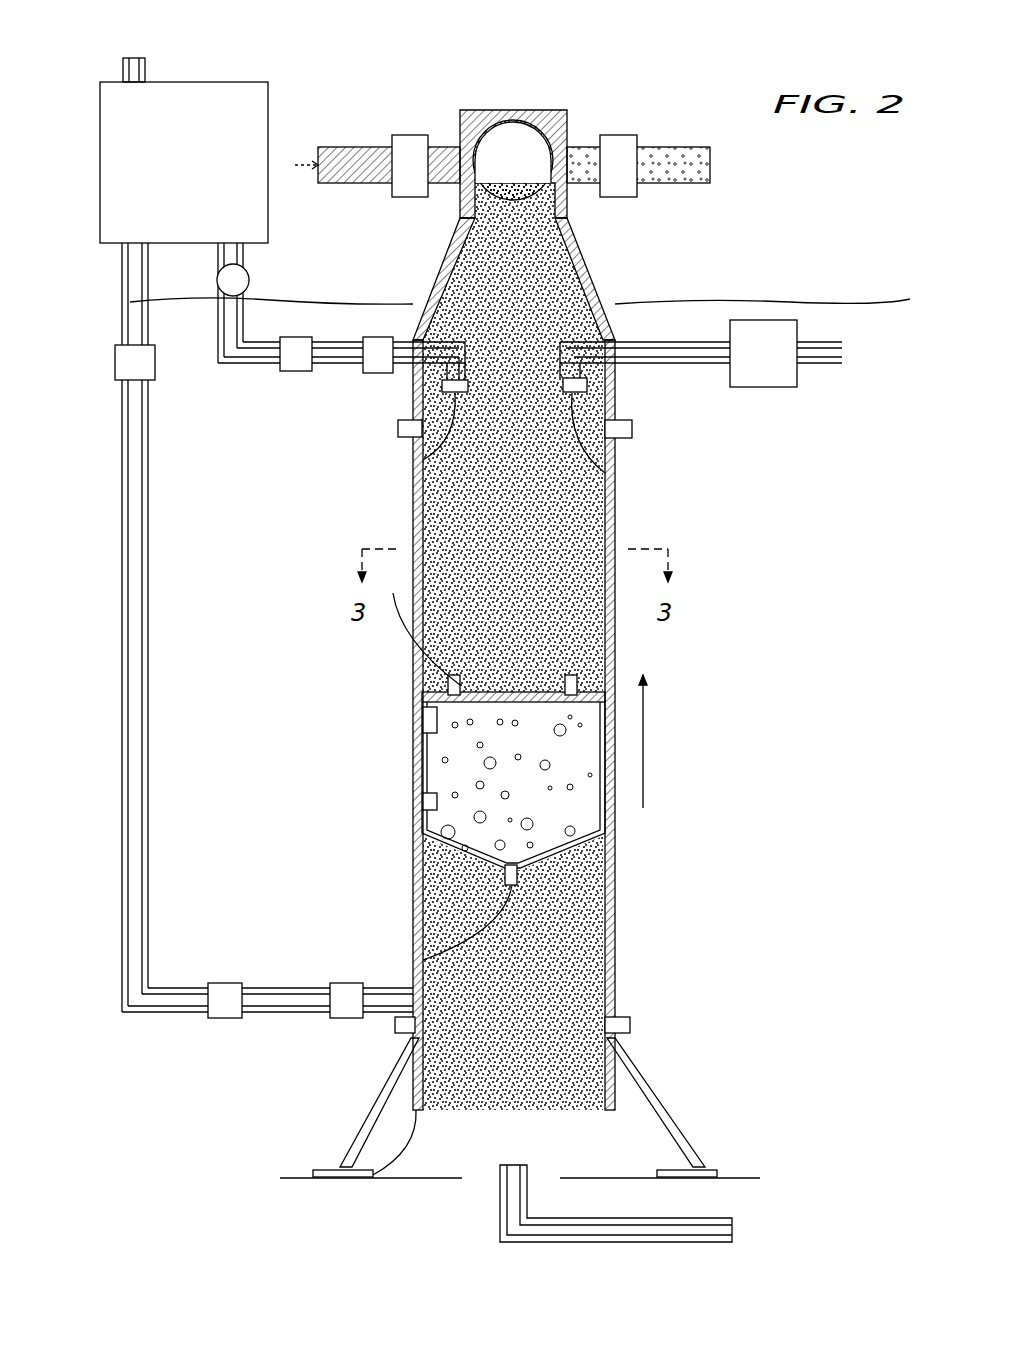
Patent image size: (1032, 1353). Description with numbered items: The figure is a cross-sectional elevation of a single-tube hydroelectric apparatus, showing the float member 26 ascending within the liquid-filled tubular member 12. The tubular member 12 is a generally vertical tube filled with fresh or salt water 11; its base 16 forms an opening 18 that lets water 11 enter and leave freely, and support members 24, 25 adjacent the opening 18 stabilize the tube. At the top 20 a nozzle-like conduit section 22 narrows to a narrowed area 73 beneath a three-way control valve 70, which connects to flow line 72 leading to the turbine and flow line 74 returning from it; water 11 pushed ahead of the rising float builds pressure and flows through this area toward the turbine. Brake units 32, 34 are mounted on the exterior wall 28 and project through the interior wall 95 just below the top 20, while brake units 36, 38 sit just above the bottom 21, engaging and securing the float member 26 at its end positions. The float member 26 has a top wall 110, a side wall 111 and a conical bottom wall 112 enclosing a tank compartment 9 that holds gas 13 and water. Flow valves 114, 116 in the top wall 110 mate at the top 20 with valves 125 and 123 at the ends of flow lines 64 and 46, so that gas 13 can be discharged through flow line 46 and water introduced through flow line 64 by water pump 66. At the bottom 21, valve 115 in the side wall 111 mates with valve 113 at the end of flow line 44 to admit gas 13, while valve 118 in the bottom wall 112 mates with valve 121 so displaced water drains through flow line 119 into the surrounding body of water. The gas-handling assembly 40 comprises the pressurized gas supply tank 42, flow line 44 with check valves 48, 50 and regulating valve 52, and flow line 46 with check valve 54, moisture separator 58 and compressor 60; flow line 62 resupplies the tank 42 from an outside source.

The tank compartment 9 is at (422, 780).
The water 11 is at (336, 147).
The tubular member 12 is at (668, 682).
The gaseous material 13 is at (575, 833).
The base 16 is at (373, 1178).
The opening 18 is at (590, 1100).
The top 20 is at (622, 318).
The bottom 21 is at (614, 1080).
The nozzle-like conduit section 22 is at (562, 222).
The support member 24 is at (375, 1103).
The support member 25 is at (655, 1105).
The float member 26 is at (615, 712).
The exterior wall 28 is at (615, 728).
The brake unit 32 is at (398, 430).
The brake unit 34 is at (632, 428).
The brake unit 36 is at (395, 1025).
The brake unit 38 is at (630, 1025).
The assembly 40 is at (84, 640).
The pressurized gas supply tank 42 is at (198, 175).
The flow line 44 is at (148, 683).
The flow line 46 is at (252, 365).
The check valve 48 is at (115, 365).
The check valve 50 is at (345, 983).
The regulating valve 52 is at (226, 983).
The check valve 54 is at (378, 374).
The moisture separator 58 is at (296, 372).
The compressor 60 is at (240, 282).
The flow line 62 is at (148, 68).
The flow line 64 is at (678, 365).
The water pump 66 is at (760, 388).
The 3-way control valve 70 is at (547, 135).
The flow line 72 is at (376, 147).
The narrowed area 73 is at (466, 216).
The flow line 74 is at (673, 147).
The interior wall 95 is at (428, 490).
The top wall 110 is at (414, 626).
The side wall 111 is at (437, 800).
The bottom wall 112 is at (575, 862).
The valve 113 is at (413, 1000).
The flow valve 114 is at (577, 672).
The valve 115 is at (437, 722).
The flow valve 116 is at (448, 672).
The valve 118 is at (440, 950).
The flow line 119 is at (540, 1243).
The valve 121 is at (500, 1168).
The valve 123 is at (423, 460).
The valve 125 is at (605, 473).